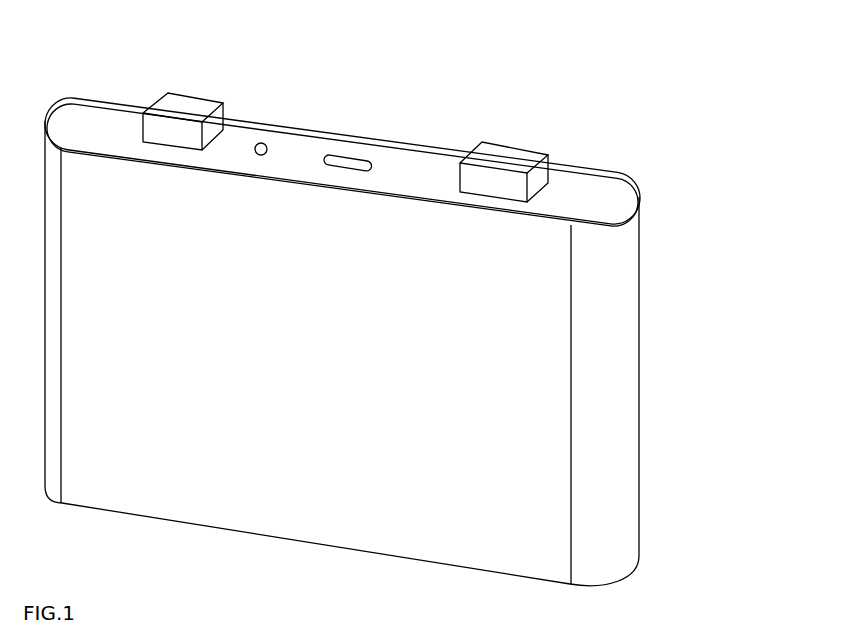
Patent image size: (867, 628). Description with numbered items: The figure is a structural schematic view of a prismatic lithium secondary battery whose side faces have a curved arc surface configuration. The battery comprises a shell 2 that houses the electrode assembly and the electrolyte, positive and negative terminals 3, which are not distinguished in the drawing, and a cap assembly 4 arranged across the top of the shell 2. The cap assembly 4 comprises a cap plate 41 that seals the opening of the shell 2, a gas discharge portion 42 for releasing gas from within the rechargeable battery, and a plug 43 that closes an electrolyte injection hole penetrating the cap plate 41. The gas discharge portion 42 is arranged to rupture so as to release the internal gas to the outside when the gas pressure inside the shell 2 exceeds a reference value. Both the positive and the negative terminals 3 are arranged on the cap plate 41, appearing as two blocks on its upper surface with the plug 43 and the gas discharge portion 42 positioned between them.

The shell 2 is at (655, 415).
The positive and negative terminals 3 is at (187, 110).
The cap assembly 4 is at (433, 115).
The cap plate 41 is at (567, 192).
The gas discharge portion 42 is at (343, 160).
The plug 43 is at (262, 143).